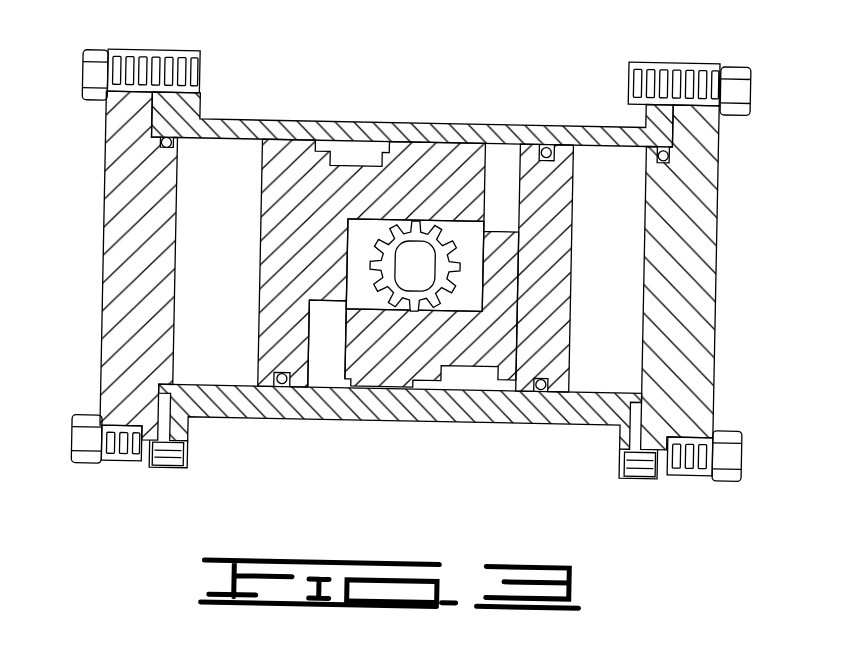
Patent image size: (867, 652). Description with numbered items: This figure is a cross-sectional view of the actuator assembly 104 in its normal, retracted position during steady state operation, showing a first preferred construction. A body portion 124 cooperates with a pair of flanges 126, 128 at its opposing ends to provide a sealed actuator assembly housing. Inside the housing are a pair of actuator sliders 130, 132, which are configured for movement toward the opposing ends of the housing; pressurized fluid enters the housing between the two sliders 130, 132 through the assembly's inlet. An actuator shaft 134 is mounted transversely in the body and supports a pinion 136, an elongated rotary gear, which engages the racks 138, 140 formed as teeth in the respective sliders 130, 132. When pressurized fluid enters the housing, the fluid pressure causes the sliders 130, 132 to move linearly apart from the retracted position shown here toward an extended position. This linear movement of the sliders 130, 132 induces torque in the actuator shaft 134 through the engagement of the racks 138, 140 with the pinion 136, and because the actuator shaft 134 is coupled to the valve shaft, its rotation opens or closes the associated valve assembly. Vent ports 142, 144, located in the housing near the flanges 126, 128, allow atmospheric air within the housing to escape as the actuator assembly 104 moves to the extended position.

The actuator assembly 104 is at (413, 270).
The body portion 124 is at (355, 123).
The flange 126 is at (130, 251).
The flange 128 is at (702, 228).
The actuator slider 130 is at (281, 179).
The actuator slider 132 is at (555, 173).
The actuator shaft 134 is at (413, 263).
The pinion 136 is at (450, 302).
The rack 138 is at (460, 236).
The rack 140 is at (343, 279).
The vent port 142 is at (177, 473).
The vent port 144 is at (651, 477).